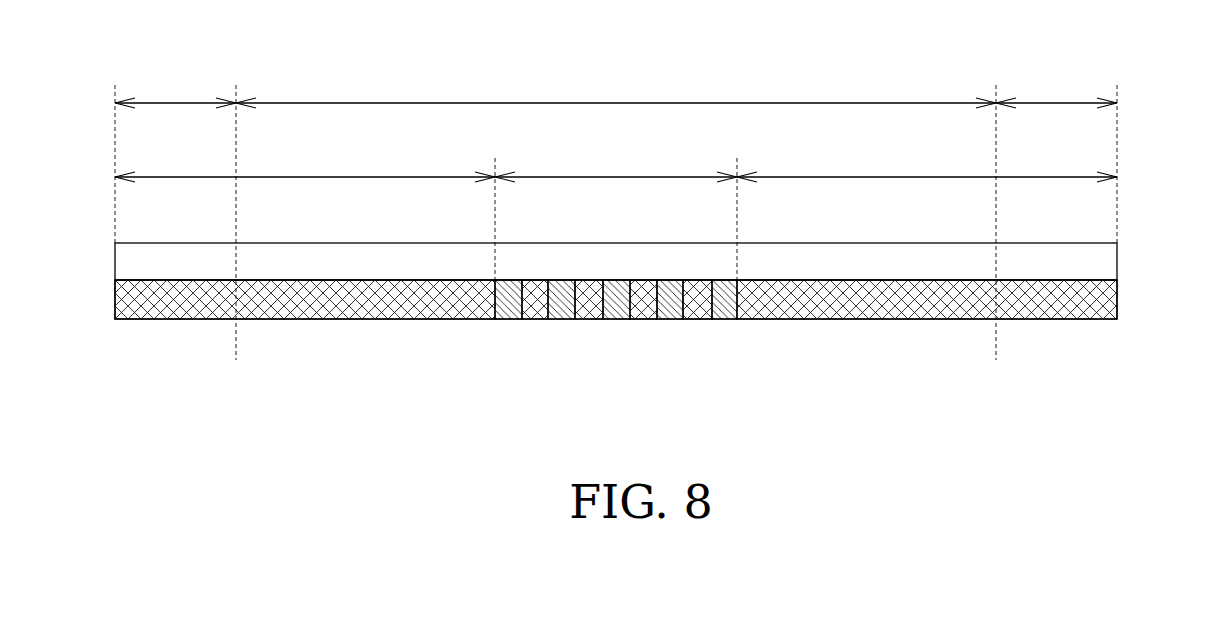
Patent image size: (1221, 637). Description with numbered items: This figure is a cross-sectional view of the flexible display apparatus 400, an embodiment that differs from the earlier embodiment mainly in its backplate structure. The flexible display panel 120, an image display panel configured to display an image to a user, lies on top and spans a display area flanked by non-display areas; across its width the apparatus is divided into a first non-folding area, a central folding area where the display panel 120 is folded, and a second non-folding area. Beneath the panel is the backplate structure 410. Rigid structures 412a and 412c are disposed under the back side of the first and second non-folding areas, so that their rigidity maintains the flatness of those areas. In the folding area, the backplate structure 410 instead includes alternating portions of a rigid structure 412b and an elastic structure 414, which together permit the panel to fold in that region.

The flexible display apparatus 400 is at (1080, 40).
The flexible display panel 120 is at (1120, 262).
The backplate structure 410 is at (654, 325).
The rigid structure 412a is at (353, 306).
The rigid structure 412b is at (643, 306).
The rigid structure 412c is at (852, 306).
The elastic structure 414 is at (562, 306).